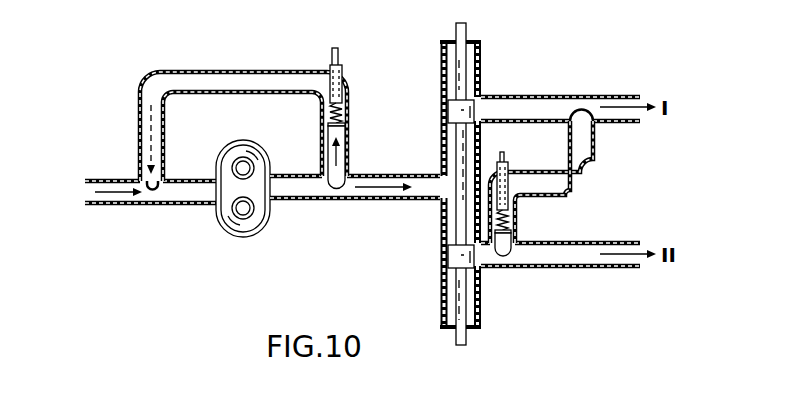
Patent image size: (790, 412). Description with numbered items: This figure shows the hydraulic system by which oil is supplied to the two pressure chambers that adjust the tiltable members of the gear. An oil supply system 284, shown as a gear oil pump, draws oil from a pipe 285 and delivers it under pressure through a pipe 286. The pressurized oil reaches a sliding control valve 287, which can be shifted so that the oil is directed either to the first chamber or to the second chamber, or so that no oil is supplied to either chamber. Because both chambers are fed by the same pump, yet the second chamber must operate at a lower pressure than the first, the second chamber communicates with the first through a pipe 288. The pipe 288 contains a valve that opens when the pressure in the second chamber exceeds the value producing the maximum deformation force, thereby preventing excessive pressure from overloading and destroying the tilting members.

The oil supply system 284 is at (233, 194).
The pipe 285 is at (109, 193).
The pipe 286 is at (310, 188).
The sliding control valve 287 is at (456, 27).
The pipe 288 is at (577, 173).